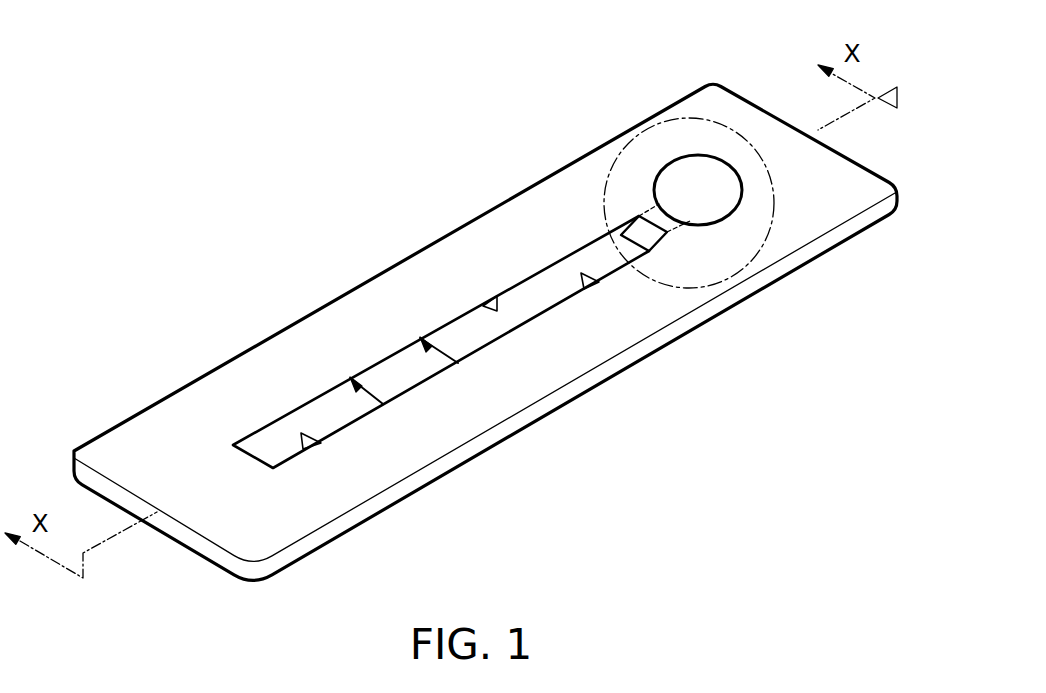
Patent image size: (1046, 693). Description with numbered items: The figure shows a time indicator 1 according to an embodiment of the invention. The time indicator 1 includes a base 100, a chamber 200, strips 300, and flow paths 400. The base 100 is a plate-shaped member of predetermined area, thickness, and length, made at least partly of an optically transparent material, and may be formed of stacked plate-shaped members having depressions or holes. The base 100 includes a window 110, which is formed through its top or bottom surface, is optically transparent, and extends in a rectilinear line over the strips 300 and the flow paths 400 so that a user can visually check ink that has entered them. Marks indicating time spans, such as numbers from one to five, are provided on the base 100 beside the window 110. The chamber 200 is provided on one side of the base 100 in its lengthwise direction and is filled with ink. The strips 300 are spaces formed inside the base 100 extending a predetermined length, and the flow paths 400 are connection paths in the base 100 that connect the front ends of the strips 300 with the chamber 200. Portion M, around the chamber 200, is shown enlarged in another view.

The time indicator 1 is at (387, 173).
The base 100 is at (541, 181).
The window 110 is at (273, 421).
The chamber 200 is at (673, 168).
The strips 300 is at (453, 369).
The flow paths 400 is at (686, 240).
The portion M is at (770, 228).